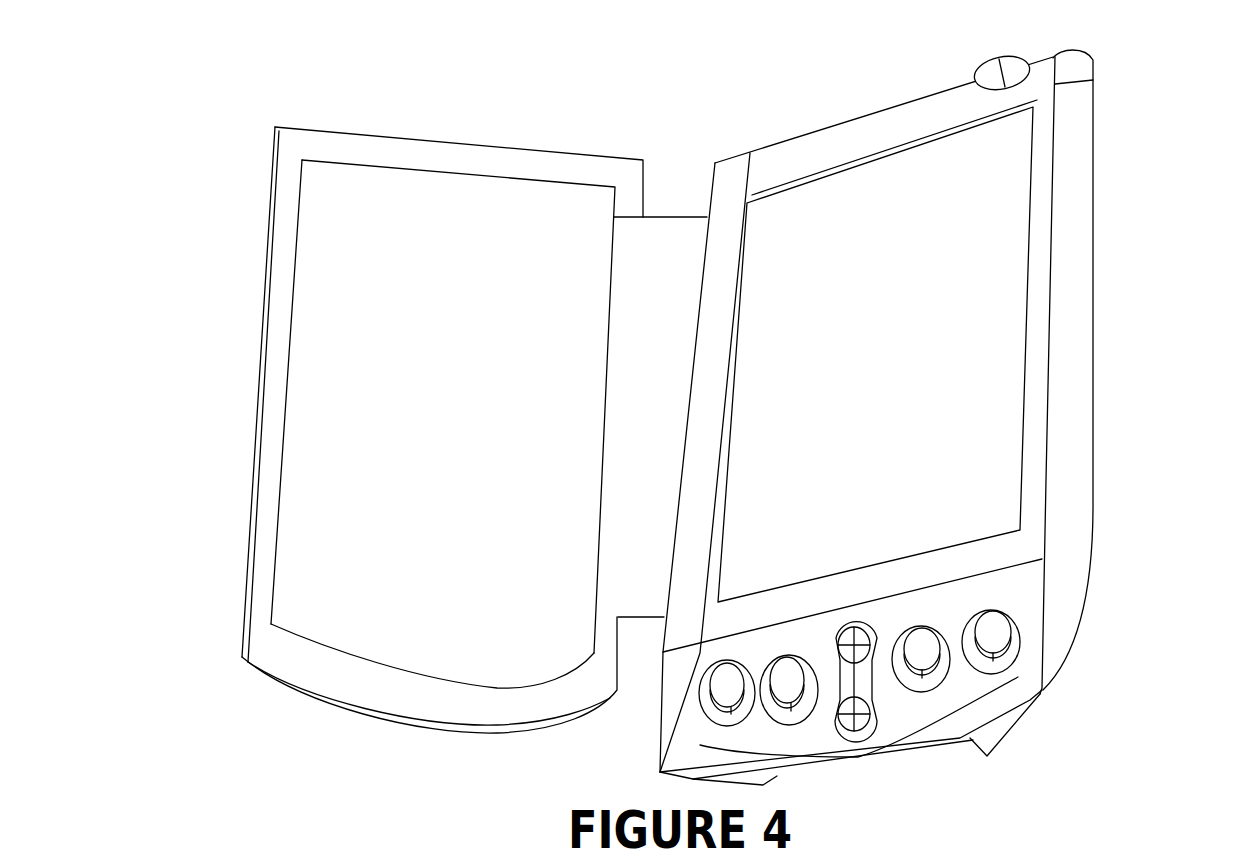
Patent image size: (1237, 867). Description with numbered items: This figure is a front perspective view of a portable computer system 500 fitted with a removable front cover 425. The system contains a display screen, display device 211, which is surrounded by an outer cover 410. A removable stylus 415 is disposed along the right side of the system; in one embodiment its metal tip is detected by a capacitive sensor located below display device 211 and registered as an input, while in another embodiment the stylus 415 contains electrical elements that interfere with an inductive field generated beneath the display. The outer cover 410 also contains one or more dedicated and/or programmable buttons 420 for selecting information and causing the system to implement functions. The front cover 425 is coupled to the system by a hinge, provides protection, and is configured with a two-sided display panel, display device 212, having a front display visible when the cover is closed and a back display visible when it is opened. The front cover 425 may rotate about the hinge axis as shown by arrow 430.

The handheld computing device 500 is at (171, 33).
The front cover 425 is at (531, 141).
The display device 212 is at (458, 339).
The display device 211 is at (908, 339).
The outer cover 410 is at (1086, 292).
The stylus 415 is at (1101, 411).
The buttons 420 is at (858, 757).
The arrow 430 is at (538, 743).